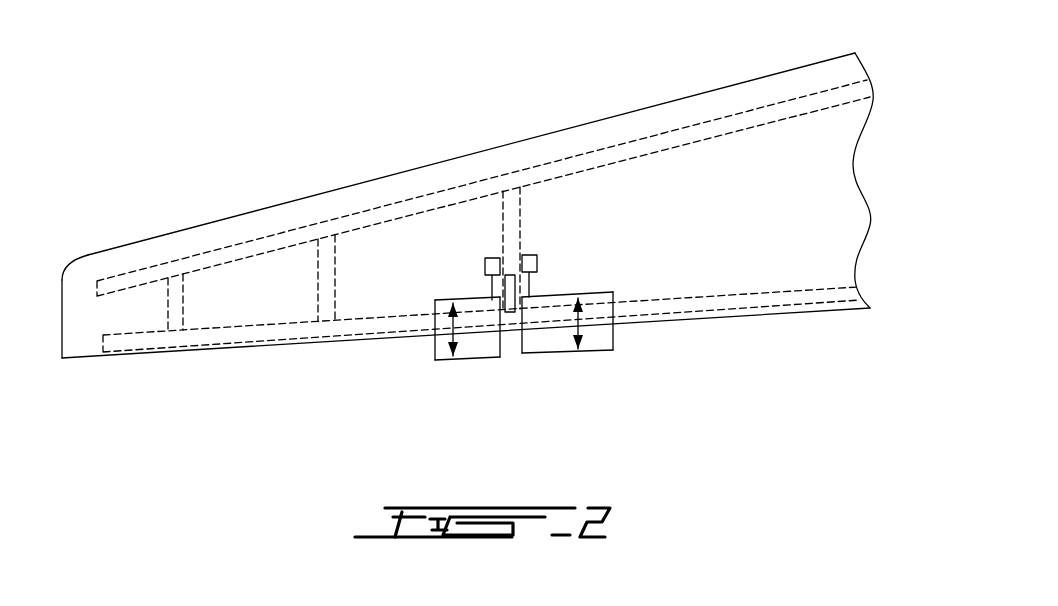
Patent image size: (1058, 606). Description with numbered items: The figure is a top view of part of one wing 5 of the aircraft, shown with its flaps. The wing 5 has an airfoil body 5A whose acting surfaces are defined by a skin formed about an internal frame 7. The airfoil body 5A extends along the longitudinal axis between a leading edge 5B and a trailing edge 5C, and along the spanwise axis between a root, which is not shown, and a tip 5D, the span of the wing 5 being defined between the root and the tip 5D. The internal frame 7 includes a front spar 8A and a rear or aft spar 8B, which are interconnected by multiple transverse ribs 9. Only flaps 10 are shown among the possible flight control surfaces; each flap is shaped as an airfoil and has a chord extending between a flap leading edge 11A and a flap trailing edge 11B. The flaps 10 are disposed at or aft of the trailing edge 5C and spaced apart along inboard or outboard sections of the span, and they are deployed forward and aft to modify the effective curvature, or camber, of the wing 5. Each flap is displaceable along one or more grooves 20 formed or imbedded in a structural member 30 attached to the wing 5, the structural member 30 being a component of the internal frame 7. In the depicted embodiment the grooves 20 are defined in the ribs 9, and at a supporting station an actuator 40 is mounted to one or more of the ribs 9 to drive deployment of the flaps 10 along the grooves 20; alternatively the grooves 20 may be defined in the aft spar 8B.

The wing 5 is at (455, 207).
The airfoil body 5A is at (643, 123).
The leading edge 5B is at (473, 153).
The trailing edge 5C is at (768, 318).
The tip 5D is at (62, 325).
The internal frame 7 is at (559, 193).
The front spar 8A is at (731, 135).
The rear or aft spar 8B is at (807, 291).
The transverse ribs 9 is at (183, 300).
The structural member 30 is at (520, 207).
The flaps 10 is at (532, 353).
The flap leading edge 11A is at (465, 297).
The flap trailing edge 11B is at (470, 358).
The grooves 20 is at (511, 277).
The actuator 40 is at (484, 263).